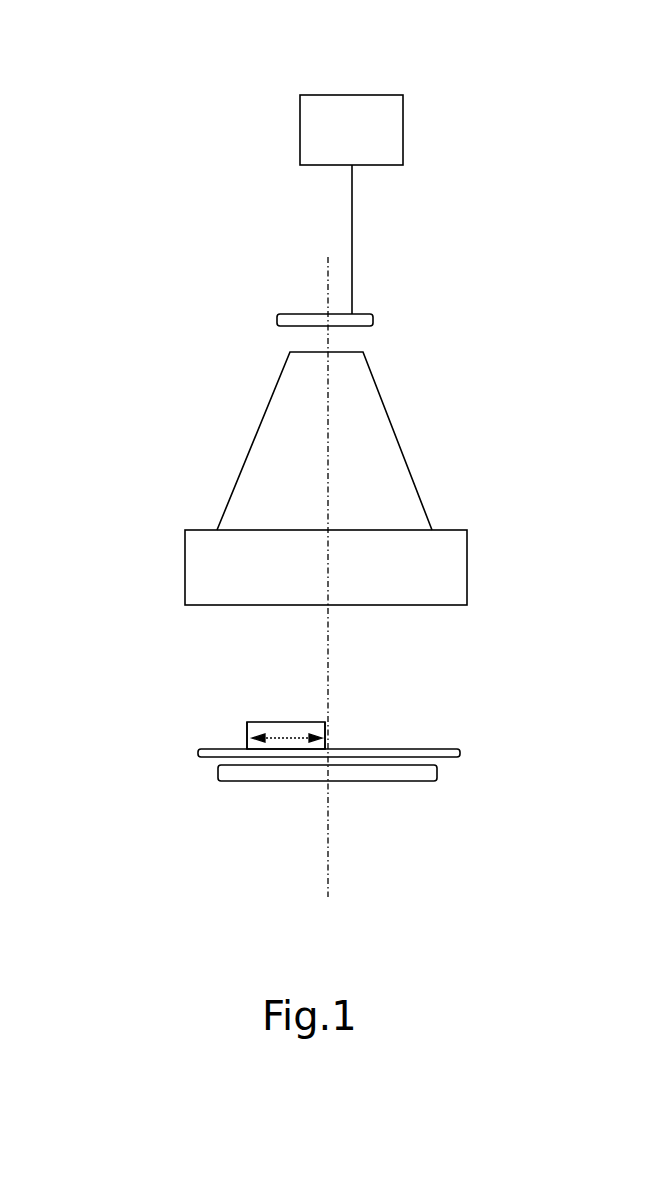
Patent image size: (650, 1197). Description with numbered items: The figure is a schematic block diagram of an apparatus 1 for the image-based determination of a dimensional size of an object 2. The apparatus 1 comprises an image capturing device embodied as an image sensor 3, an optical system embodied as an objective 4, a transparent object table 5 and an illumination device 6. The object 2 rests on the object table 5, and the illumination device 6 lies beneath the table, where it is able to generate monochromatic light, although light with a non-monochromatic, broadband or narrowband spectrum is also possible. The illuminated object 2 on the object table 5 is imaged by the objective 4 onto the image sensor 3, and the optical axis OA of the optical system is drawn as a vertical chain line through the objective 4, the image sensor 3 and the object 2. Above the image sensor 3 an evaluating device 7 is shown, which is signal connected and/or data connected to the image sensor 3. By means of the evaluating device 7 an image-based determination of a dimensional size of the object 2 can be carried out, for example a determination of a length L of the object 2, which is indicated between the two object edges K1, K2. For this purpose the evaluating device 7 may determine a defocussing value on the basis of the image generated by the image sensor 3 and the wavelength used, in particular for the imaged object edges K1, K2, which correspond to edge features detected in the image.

The apparatus 1 is at (112, 872).
The object 2 is at (268, 720).
The image sensor 3 is at (373, 318).
The objective 4 is at (467, 530).
The transparent object table 5 is at (447, 749).
The illumination device 6 is at (410, 781).
The evaluating device 7 is at (367, 95).
The optical axis OA is at (330, 632).
The length L is at (285, 736).
The object edge K1 is at (247, 721).
The object edge K2 is at (326, 721).